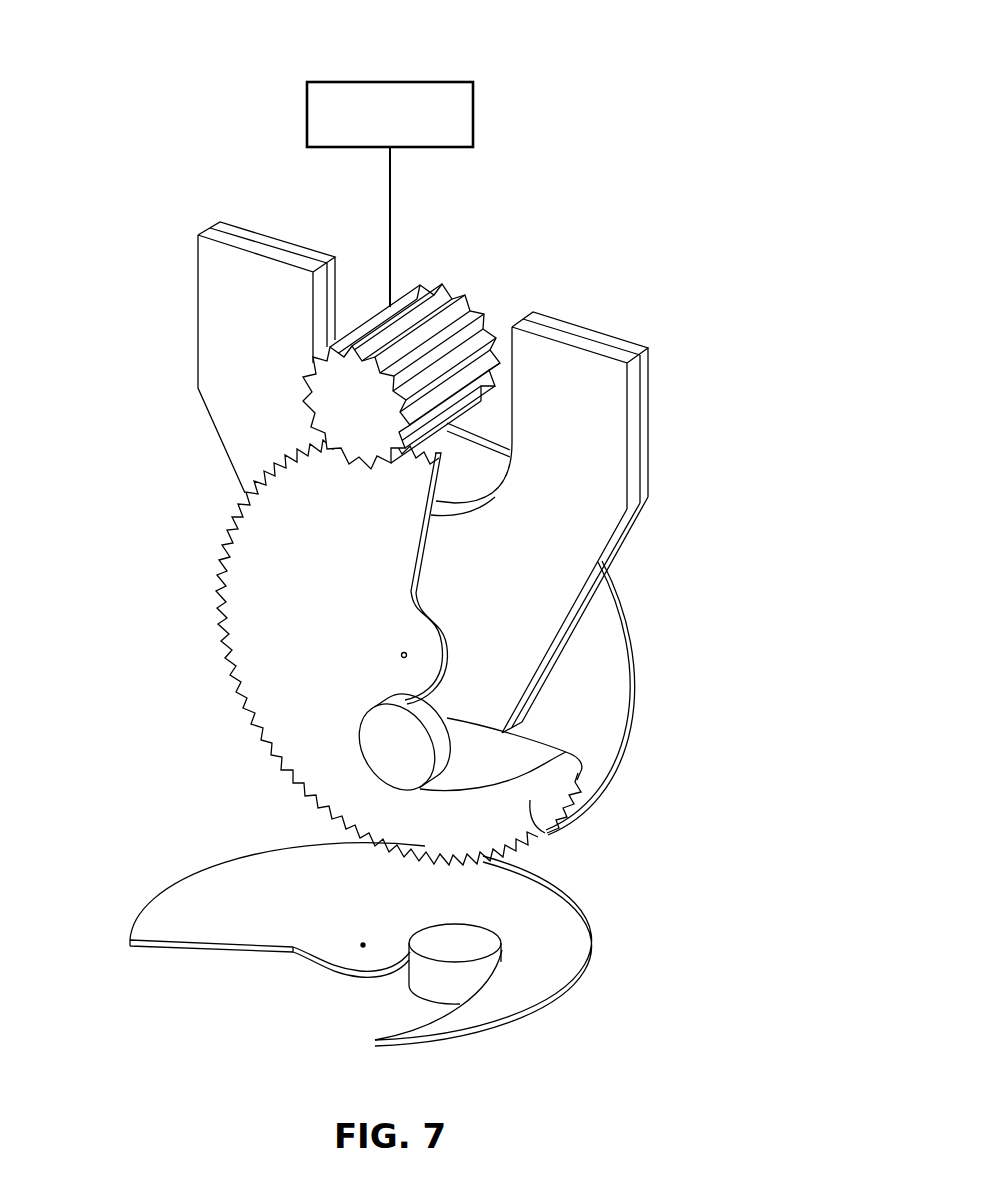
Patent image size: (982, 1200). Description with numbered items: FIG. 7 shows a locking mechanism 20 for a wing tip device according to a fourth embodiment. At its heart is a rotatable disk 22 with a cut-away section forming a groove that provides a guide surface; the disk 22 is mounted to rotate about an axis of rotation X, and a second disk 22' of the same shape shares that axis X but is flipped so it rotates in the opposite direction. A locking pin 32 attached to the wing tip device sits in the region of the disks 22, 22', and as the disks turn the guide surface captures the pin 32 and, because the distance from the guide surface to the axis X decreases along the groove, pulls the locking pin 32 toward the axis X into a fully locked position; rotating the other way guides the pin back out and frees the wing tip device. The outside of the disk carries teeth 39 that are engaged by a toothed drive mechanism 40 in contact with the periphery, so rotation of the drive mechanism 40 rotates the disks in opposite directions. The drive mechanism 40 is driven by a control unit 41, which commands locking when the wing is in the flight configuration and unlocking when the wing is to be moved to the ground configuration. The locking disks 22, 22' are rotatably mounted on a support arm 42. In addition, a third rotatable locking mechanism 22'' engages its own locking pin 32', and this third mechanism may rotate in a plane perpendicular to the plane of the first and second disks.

The locking mechanism 20 is at (198, 505).
The rotatable disk 22 is at (552, 665).
The second disk 22' is at (641, 698).
The third rotatable locking mechanism 22'' is at (404, 944).
The locking pin 32 is at (381, 738).
The locking pin 32' is at (418, 944).
The teeth 39 is at (220, 632).
The drive mechanism 40 is at (441, 307).
The control unit 41 is at (376, 82).
The support arm 42 is at (597, 343).
The axis of rotation X is at (402, 653).